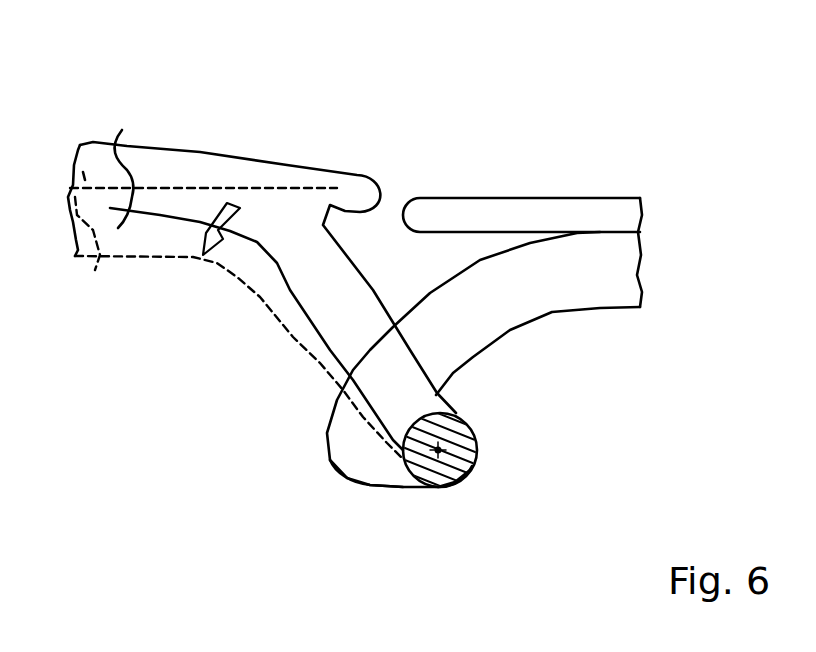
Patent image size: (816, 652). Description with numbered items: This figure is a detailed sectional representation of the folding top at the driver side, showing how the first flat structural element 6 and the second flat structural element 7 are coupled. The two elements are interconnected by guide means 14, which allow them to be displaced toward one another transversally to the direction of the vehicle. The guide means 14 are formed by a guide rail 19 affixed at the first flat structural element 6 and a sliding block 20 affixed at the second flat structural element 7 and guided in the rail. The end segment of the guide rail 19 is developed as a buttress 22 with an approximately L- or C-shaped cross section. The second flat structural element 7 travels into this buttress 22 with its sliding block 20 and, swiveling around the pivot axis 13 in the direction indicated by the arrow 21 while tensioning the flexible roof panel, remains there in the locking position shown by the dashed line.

The first flat structural element 6 is at (497, 198).
The second flat structural element 7 is at (287, 165).
The pivot axis 13 is at (440, 450).
The guide means 14 is at (592, 310).
The guide rail 19 is at (552, 312).
The sliding block 20 is at (452, 472).
The arrow 21 is at (227, 210).
The buttress 22 is at (385, 485).